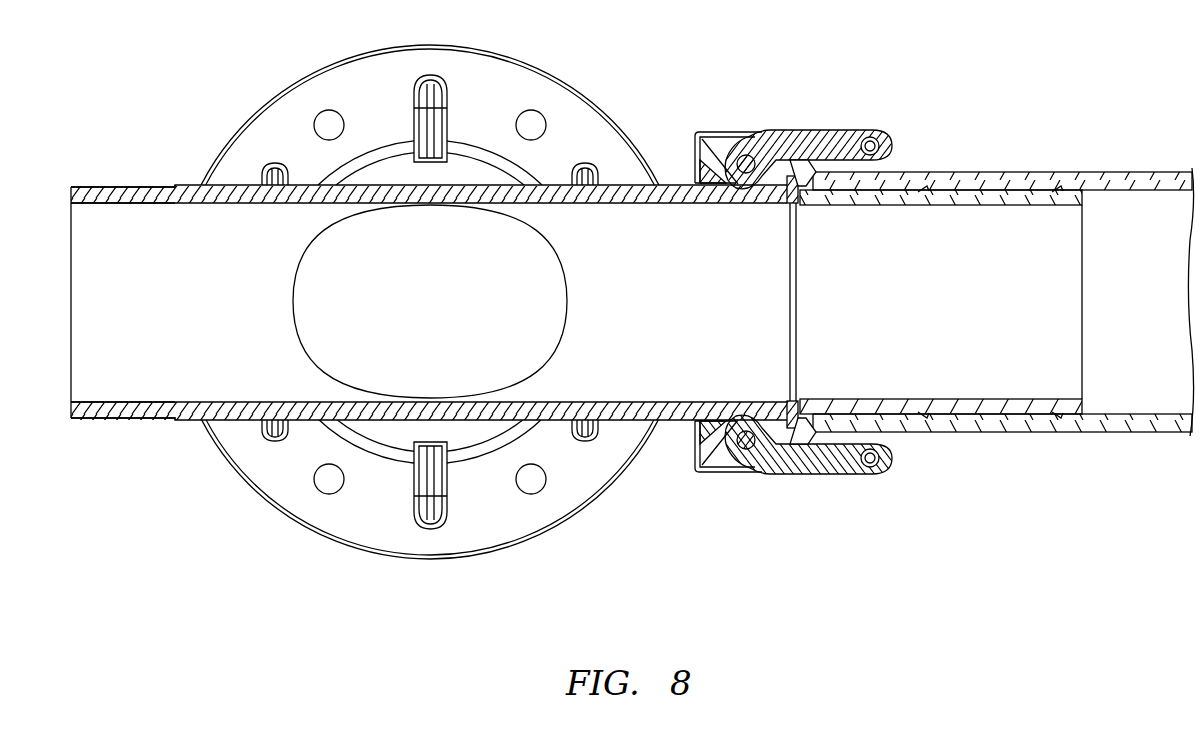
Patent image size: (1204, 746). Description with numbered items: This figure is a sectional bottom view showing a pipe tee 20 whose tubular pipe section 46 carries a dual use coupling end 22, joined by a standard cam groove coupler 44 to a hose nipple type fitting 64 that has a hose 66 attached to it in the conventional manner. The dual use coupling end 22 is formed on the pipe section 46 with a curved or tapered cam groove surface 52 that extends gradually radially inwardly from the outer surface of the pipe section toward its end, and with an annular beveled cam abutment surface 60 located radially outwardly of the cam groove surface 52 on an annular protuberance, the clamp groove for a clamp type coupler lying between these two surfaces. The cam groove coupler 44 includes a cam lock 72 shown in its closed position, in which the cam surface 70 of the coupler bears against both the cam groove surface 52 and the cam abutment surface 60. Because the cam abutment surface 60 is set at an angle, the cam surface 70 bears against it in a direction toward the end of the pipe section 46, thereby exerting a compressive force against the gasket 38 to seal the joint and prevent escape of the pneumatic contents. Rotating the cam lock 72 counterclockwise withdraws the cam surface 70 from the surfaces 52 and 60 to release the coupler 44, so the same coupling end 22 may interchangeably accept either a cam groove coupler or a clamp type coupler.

The pipe tee 20 is at (183, 422).
The dual use coupling end 22 is at (730, 214).
The gasket 38 is at (802, 188).
The cam groove coupler 44 is at (728, 132).
The tubular pipe section 46 is at (632, 423).
The cam groove surface 52 is at (715, 145).
The cam abutment surface 60 is at (762, 152).
The hose nipple type fitting 64 is at (1085, 307).
The hose 66 is at (1082, 437).
The cam surface 70 is at (778, 188).
The cam lock 72 is at (793, 128).